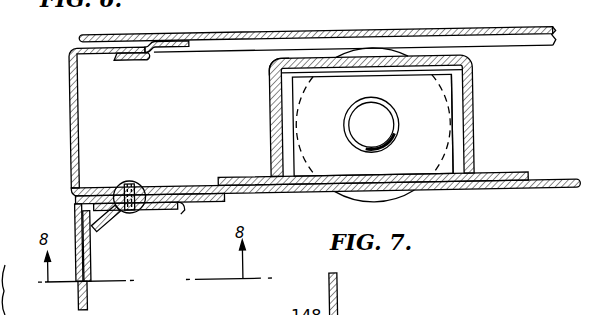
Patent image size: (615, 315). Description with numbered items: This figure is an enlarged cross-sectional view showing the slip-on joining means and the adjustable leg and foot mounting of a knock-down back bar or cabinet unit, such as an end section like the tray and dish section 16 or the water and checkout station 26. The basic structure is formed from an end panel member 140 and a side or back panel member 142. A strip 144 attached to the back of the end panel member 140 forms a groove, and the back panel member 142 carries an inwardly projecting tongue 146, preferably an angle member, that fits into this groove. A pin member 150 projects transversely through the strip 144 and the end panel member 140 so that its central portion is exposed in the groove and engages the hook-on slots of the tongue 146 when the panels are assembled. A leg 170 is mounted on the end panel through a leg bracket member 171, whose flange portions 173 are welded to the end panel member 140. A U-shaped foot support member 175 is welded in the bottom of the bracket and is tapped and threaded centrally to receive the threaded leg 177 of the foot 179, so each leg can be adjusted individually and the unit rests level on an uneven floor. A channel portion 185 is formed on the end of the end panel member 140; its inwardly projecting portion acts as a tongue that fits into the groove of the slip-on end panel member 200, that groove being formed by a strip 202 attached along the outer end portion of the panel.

The tray and dish section 16 is at (317, 26).
The water and checkout station 26 is at (317, 30).
The end panel member 140 is at (553, 186).
The side or back panel member 142 is at (86, 296).
The strip 144 is at (216, 199).
The tongue 146 is at (150, 206).
The pin member 150 is at (131, 182).
The leg 170 is at (484, 120).
The leg bracket member 171 is at (272, 61).
The flange portion 173 is at (238, 177).
The foot support member 175 is at (456, 93).
The threaded leg 177 is at (372, 123).
The foot 179 is at (385, 200).
The channel portion 185 is at (70, 87).
The slip-on end panel member 200 is at (300, 31).
The strip 202 is at (160, 52).